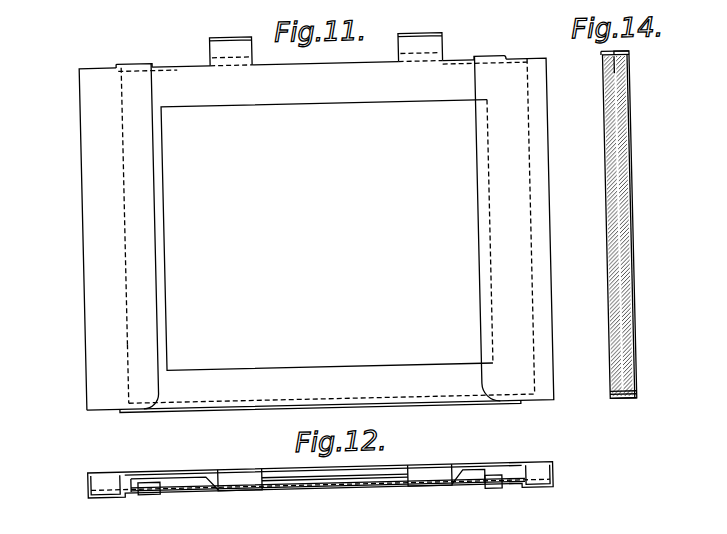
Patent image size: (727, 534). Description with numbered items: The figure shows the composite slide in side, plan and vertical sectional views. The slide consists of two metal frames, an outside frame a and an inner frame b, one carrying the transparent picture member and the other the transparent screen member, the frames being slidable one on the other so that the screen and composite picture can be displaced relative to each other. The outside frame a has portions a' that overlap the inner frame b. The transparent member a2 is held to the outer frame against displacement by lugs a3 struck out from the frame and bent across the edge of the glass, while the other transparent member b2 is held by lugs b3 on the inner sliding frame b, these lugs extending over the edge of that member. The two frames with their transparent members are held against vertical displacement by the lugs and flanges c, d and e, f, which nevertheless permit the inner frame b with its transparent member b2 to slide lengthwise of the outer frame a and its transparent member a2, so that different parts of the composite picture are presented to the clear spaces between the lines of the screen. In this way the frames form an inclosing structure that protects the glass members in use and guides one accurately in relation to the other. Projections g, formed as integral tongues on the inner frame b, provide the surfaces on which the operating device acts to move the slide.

In FIG. 11, the outside frame a is at (298, 234).
In FIG. 12, the outside frame a is at (320, 464).
In FIG. 14, the outside frame a is at (602, 226).
In FIG. 11, the overlapping portions a' is at (309, 232).
In FIG. 12, the transparent member a2 is at (323, 454).
In FIG. 14, the transparent member a2 is at (610, 327).
In FIG. 12, the lugs a3 is at (320, 460).
In FIG. 14, the lugs a3 is at (606, 86).
In FIG. 11, the inner frame b is at (162, 260).
In FIG. 12, the inner frame b is at (328, 506).
In FIG. 14, the inner frame b is at (632, 375).
In FIG. 11, the transparent member b2 is at (127, 232).
In FIG. 12, the transparent member b2 is at (335, 501).
In FIG. 11, the lugs b3 is at (126, 86).
In FIG. 12, the lugs b3 is at (321, 503).
In FIG. 11, the lug c is at (139, 62).
In FIG. 12, the lug c is at (324, 504).
In FIG. 14, the lug c is at (624, 59).
In FIG. 11, the flange d is at (181, 67).
In FIG. 12, the flange d is at (308, 501).
In FIG. 14, the flange d is at (632, 75).
In FIG. 11, the lug e is at (264, 399).
In FIG. 14, the lug e is at (634, 402).
In FIG. 11, the flange f is at (253, 406).
In FIG. 14, the flange f is at (620, 407).
In FIG. 11, the projections g is at (216, 46).
In FIG. 12, the projections g is at (330, 498).